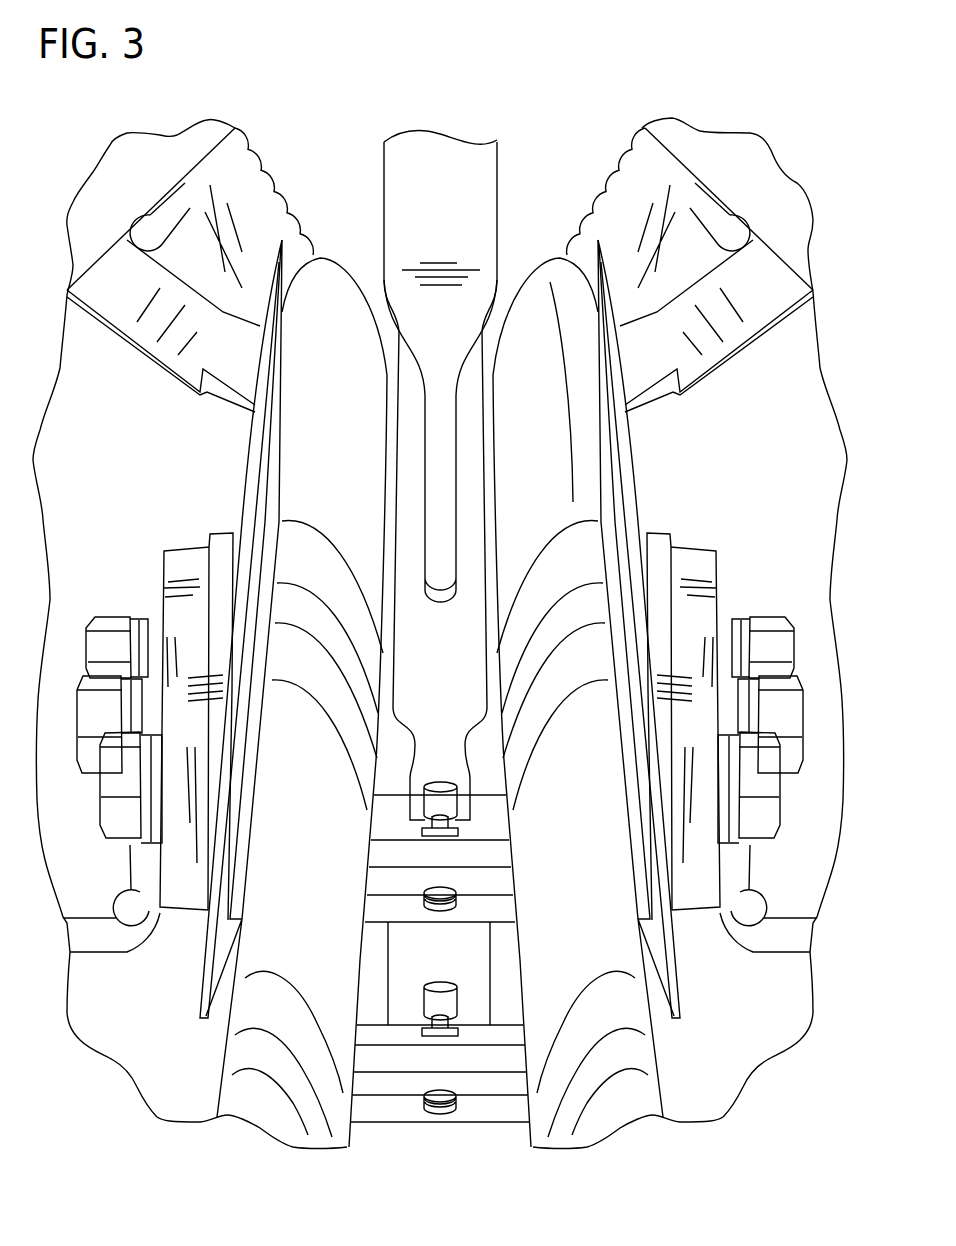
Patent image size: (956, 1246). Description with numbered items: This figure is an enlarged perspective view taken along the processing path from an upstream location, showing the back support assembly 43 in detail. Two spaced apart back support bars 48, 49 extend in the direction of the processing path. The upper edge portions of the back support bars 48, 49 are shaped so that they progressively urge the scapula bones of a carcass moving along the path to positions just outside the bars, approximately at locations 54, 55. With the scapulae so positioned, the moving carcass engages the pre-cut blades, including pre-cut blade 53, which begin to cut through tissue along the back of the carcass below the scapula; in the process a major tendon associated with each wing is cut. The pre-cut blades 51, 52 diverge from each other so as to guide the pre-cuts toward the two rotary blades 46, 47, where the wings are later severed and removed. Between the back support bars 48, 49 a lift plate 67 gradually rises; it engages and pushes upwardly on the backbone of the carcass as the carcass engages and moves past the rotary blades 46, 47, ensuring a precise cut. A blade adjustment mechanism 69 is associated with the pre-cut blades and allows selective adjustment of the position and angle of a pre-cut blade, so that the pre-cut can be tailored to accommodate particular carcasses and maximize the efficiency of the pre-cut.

The back support assembly 43 is at (735, 442).
The rotary blade 46 is at (630, 193).
The rotary blade 47 is at (250, 193).
The back support bar 48 is at (345, 405).
The back support bar 49 is at (556, 405).
The pre-cut blade 51 is at (252, 485).
The pre-cut blade 52 is at (628, 485).
The pre-cut blade 53 is at (456, 219).
The scapula position location 54 is at (586, 447).
The scapula position location 55 is at (293, 453).
The lift plate 67 is at (437, 503).
The blade adjustment mechanism 69 is at (120, 582).